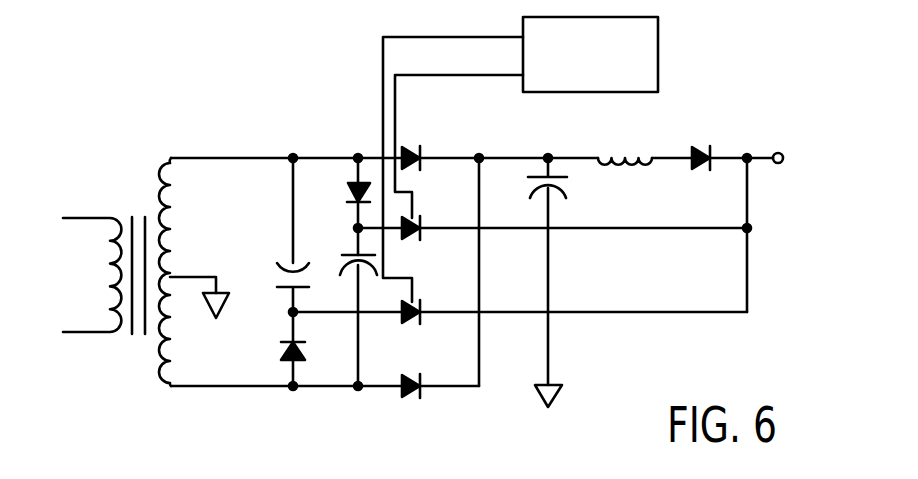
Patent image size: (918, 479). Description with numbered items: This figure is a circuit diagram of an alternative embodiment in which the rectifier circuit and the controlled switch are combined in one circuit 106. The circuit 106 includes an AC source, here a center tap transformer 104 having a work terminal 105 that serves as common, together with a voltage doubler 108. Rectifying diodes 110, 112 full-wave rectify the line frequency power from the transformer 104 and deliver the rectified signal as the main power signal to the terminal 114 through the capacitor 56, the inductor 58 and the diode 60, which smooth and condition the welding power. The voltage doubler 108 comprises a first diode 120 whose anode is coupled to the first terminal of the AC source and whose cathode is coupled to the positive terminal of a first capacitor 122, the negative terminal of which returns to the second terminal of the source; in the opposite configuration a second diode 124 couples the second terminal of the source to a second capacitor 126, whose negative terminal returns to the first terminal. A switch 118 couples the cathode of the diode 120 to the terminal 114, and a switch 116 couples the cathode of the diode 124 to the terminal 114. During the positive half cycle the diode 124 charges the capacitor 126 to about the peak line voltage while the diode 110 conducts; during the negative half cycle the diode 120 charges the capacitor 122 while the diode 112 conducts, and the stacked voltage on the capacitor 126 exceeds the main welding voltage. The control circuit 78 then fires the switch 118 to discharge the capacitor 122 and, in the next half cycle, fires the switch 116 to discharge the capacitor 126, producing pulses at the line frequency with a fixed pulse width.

The center tap transformer 104 is at (139, 198).
The work terminal 105 is at (196, 273).
The circuit 106 is at (237, 146).
The voltage doubler 108 is at (357, 148).
The rectifying diode 110 is at (411, 147).
The rectifying diode 112 is at (414, 398).
The terminal 114 is at (761, 150).
The switch 116 is at (413, 240).
The switch 118 is at (411, 326).
The first diode 120 is at (305, 358).
The first capacitor 122 is at (284, 290).
The second diode 124 is at (347, 199).
The second capacitor 126 is at (346, 272).
The capacitor 56 is at (571, 188).
The inductor 58 is at (621, 148).
The diode 60 is at (702, 175).
The control circuit 78 is at (661, 53).